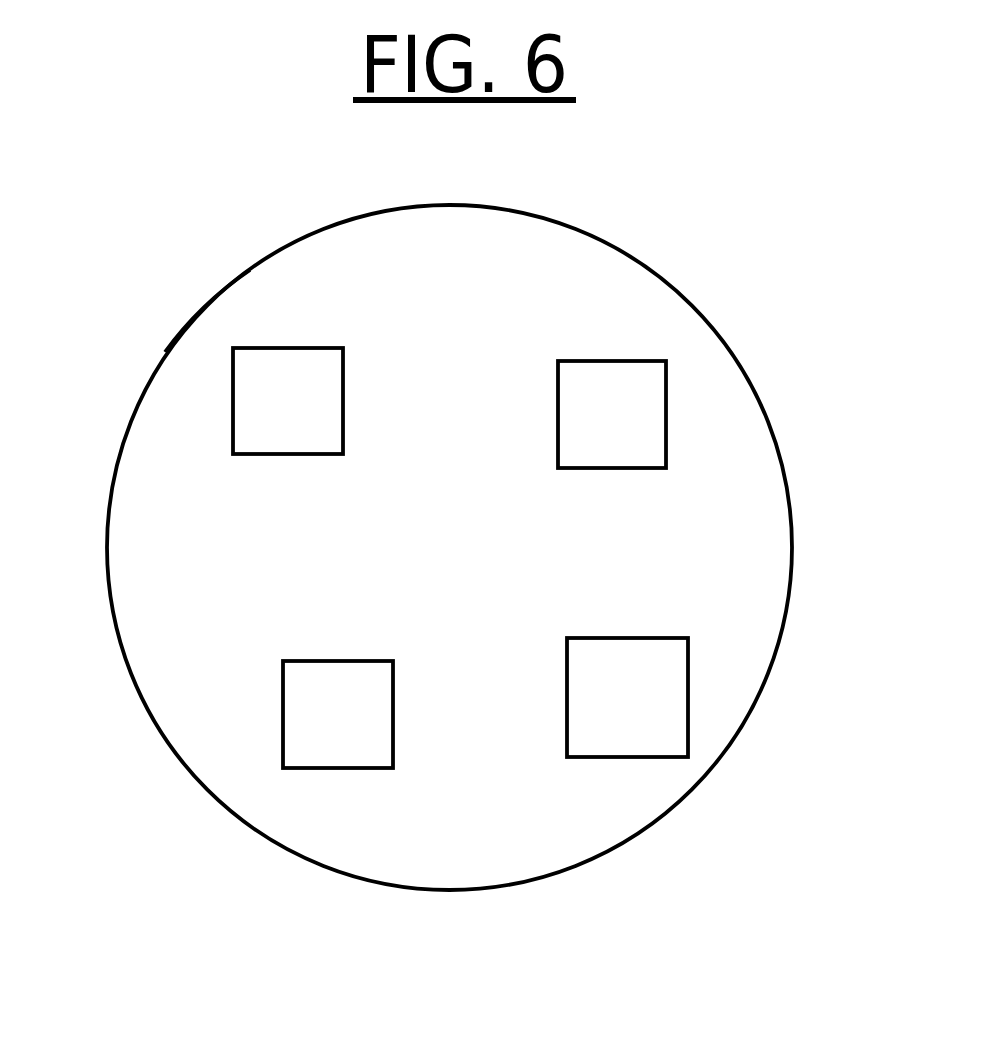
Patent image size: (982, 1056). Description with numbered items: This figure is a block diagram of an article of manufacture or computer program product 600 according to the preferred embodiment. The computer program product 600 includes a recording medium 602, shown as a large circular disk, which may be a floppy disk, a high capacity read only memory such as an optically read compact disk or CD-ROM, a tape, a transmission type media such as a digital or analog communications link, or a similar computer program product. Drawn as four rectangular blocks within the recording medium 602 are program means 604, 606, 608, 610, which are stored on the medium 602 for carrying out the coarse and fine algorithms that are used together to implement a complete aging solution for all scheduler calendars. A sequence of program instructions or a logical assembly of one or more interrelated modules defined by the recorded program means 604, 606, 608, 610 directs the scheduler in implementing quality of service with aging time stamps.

The computer program product 600 is at (750, 313).
The recording medium 602 is at (155, 342).
The program means 604 is at (338, 714).
The program means 606 is at (627, 697).
The program means 608 is at (612, 414).
The program means 610 is at (288, 401).